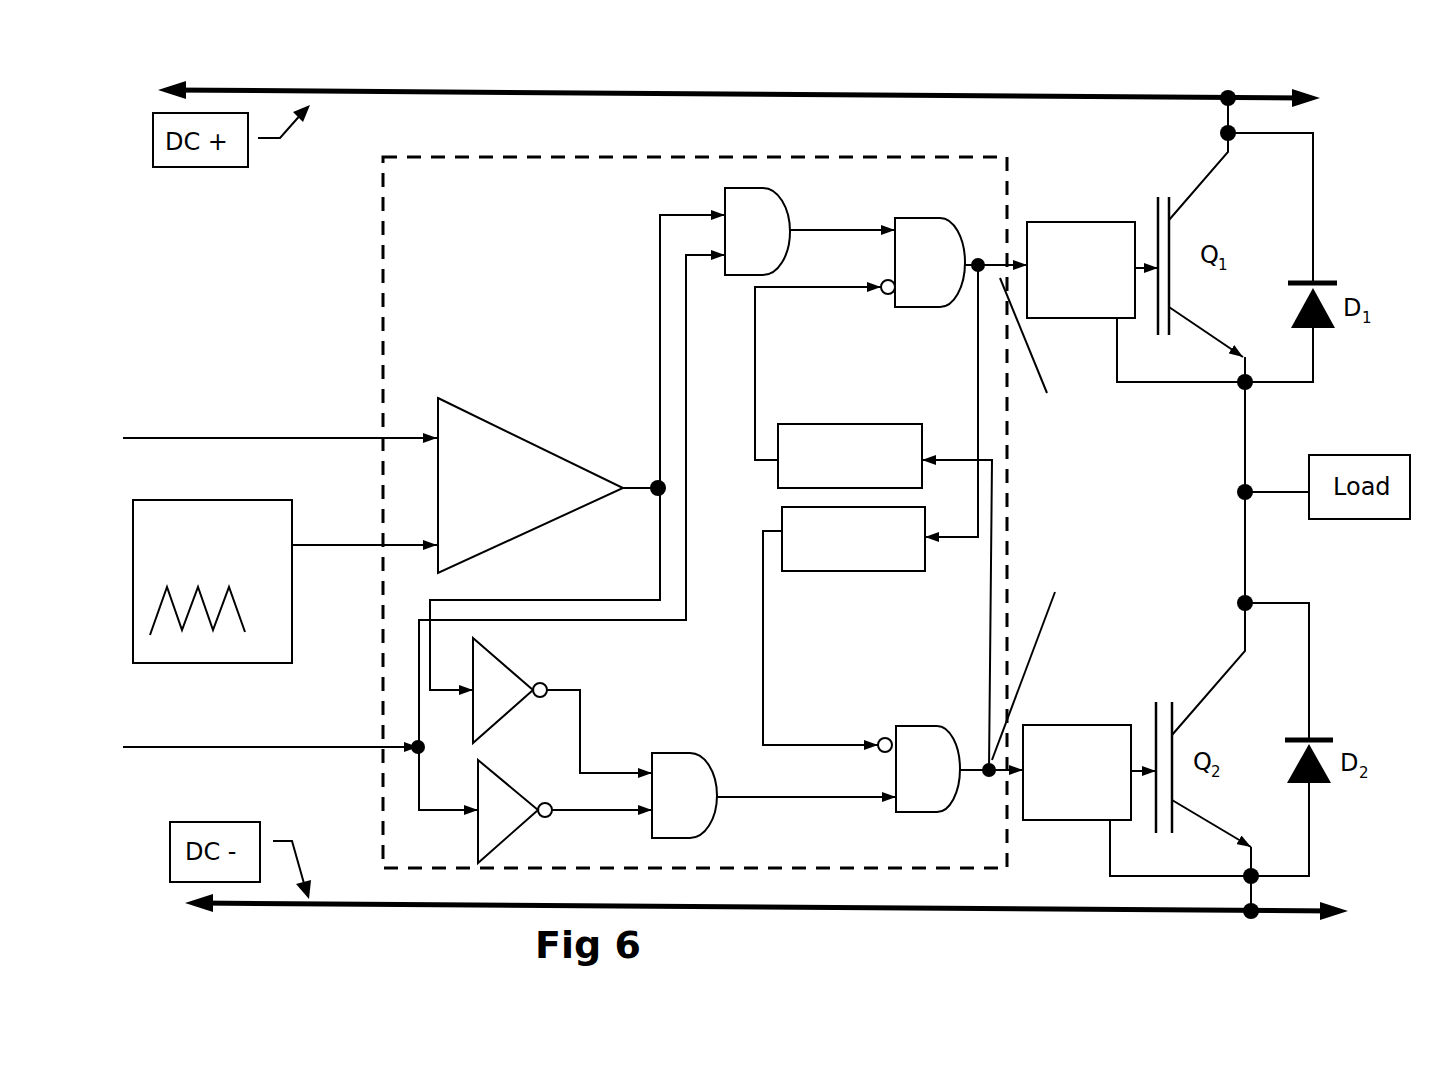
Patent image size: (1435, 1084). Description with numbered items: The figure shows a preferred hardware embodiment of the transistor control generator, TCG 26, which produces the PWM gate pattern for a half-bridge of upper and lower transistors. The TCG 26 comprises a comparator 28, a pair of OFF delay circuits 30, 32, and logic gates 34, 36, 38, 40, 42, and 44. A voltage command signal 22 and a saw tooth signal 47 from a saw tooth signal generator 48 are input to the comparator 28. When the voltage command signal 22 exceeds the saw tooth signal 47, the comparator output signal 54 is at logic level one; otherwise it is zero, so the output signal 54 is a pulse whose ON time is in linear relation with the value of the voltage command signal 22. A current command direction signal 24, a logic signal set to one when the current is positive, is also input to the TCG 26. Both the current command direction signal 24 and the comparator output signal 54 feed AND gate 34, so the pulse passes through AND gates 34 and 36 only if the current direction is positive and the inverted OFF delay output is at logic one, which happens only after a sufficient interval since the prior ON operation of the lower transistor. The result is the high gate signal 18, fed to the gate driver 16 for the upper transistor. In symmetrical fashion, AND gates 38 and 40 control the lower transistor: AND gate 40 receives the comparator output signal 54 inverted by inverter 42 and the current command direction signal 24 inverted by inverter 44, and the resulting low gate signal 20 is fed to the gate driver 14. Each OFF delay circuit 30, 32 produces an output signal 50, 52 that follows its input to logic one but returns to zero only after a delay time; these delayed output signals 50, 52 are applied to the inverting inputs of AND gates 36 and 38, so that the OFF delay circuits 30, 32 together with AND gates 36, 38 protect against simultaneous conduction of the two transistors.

The gate driver 14 is at (1088, 735).
The gate driver 16 is at (1087, 232).
The gate signal Chigh 18 is at (997, 257).
The gate signal Clow 20 is at (998, 760).
The voltage command signal 22 is at (372, 435).
The current command direction signal 24 is at (360, 745).
The transistor control generator (TCG) 26 is at (388, 277).
The comparator 28 is at (468, 428).
The OFF delay circuit 30 is at (872, 435).
The OFF delay circuit 32 is at (843, 562).
The AND logic gate 34 is at (760, 215).
The AND gate 36 is at (922, 228).
The AND gate 38 is at (913, 740).
The AND gate 40 is at (675, 770).
The inverter 42 is at (500, 672).
The inverter 44 is at (520, 812).
The saw tooth signal 47 is at (362, 540).
The saw tooth signal generator 48 is at (282, 552).
The output signal of OFF delay circuit 50 is at (760, 418).
The output signal of OFF delay circuit 52 is at (830, 740).
The comparator output signal 54 is at (648, 478).